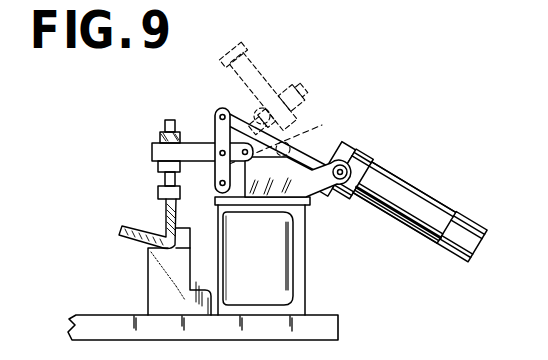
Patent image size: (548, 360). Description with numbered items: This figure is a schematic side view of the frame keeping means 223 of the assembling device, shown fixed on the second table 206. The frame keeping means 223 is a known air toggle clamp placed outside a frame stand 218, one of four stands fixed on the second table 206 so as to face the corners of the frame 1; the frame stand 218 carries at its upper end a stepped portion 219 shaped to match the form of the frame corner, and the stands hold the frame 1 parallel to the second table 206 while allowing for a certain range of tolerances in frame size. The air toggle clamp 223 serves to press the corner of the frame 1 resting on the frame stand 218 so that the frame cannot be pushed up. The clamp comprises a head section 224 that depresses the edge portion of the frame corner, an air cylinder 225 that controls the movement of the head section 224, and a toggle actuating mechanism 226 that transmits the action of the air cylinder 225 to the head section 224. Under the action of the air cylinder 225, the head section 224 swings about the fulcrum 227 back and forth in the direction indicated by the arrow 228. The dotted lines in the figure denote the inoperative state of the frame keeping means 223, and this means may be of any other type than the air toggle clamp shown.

The frame 1 is at (163, 230).
The second table 206 is at (340, 325).
The frame stand 218 is at (150, 286).
The stepped portion 219 is at (183, 232).
The frame keeping means 223 is at (411, 132).
The head section 224 is at (151, 151).
The air cylinder 225 is at (430, 200).
The toggle actuating mechanism 226 is at (226, 140).
The fulcrum 227 is at (278, 130).
The arrow 228 is at (210, 64).